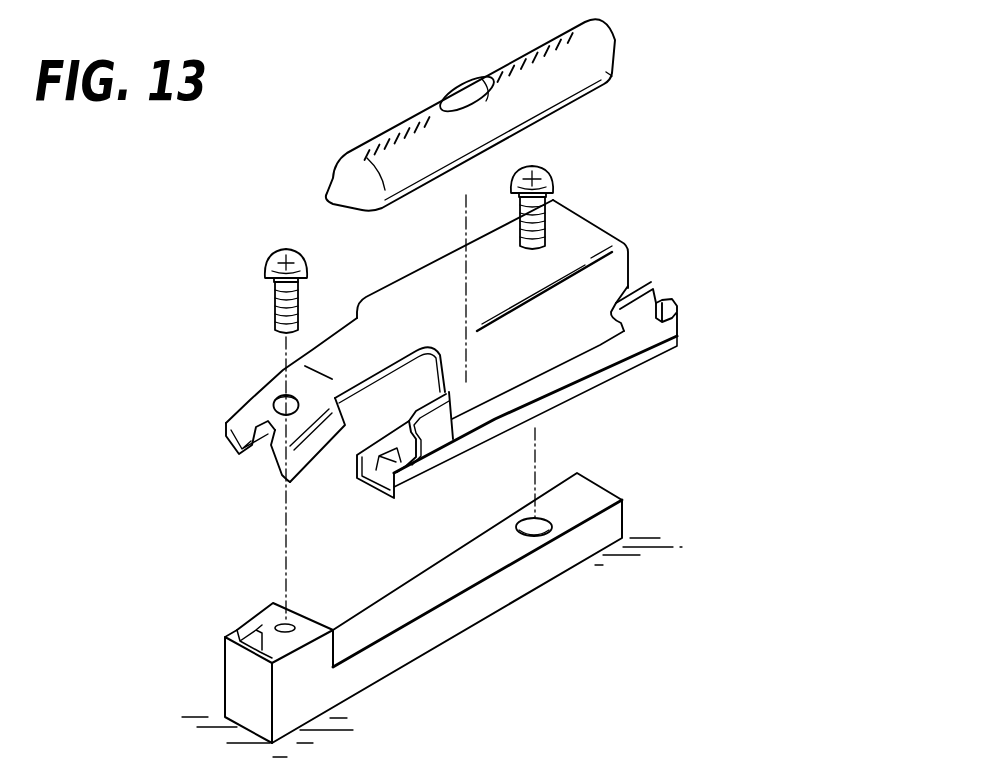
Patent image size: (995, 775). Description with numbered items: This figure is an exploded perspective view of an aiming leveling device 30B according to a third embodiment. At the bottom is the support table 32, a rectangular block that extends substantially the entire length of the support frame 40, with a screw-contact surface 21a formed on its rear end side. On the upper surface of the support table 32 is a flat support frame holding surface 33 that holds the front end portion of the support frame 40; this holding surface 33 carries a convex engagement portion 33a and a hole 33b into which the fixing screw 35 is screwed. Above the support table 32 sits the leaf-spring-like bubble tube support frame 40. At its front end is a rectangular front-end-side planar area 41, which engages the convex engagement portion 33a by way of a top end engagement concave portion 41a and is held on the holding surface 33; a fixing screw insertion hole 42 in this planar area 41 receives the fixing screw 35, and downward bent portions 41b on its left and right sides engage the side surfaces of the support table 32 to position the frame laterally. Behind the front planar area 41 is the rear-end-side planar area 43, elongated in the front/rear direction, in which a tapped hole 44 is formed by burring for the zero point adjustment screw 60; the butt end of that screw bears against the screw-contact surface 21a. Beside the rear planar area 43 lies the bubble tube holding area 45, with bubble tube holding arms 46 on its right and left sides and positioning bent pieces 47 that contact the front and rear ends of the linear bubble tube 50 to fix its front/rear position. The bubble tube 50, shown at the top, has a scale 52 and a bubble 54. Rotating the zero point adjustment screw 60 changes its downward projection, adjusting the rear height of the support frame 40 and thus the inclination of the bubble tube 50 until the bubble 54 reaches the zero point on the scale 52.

The aiming leveling device 30B is at (336, 147).
The linear bubble tube 50 is at (452, 80).
The scale 52 is at (402, 133).
The bubble 54 is at (477, 82).
The zero point adjustment screw 60 is at (553, 183).
The fixing screw 35 is at (268, 262).
The bubble tube support frame 40 is at (358, 255).
The tapped hole 44 is at (565, 215).
The rear-end-side planar area 43 is at (606, 247).
The front-end-side planar area 41 is at (256, 399).
The fixing screw insertion hole 42 is at (282, 396).
The top end engagement concave portion 41a is at (251, 458).
The downward bent portions 41b is at (228, 446).
The bubble tube holding area 45 is at (576, 397).
The bubble tube holding arms 46 is at (651, 282).
The positioning bent pieces 47 is at (680, 305).
The screw-contact surface 21a is at (552, 523).
The support table 32 is at (241, 673).
The support frame holding surface 33 is at (272, 617).
The convex engagement portion 33a is at (252, 632).
The hole 33b is at (293, 633).